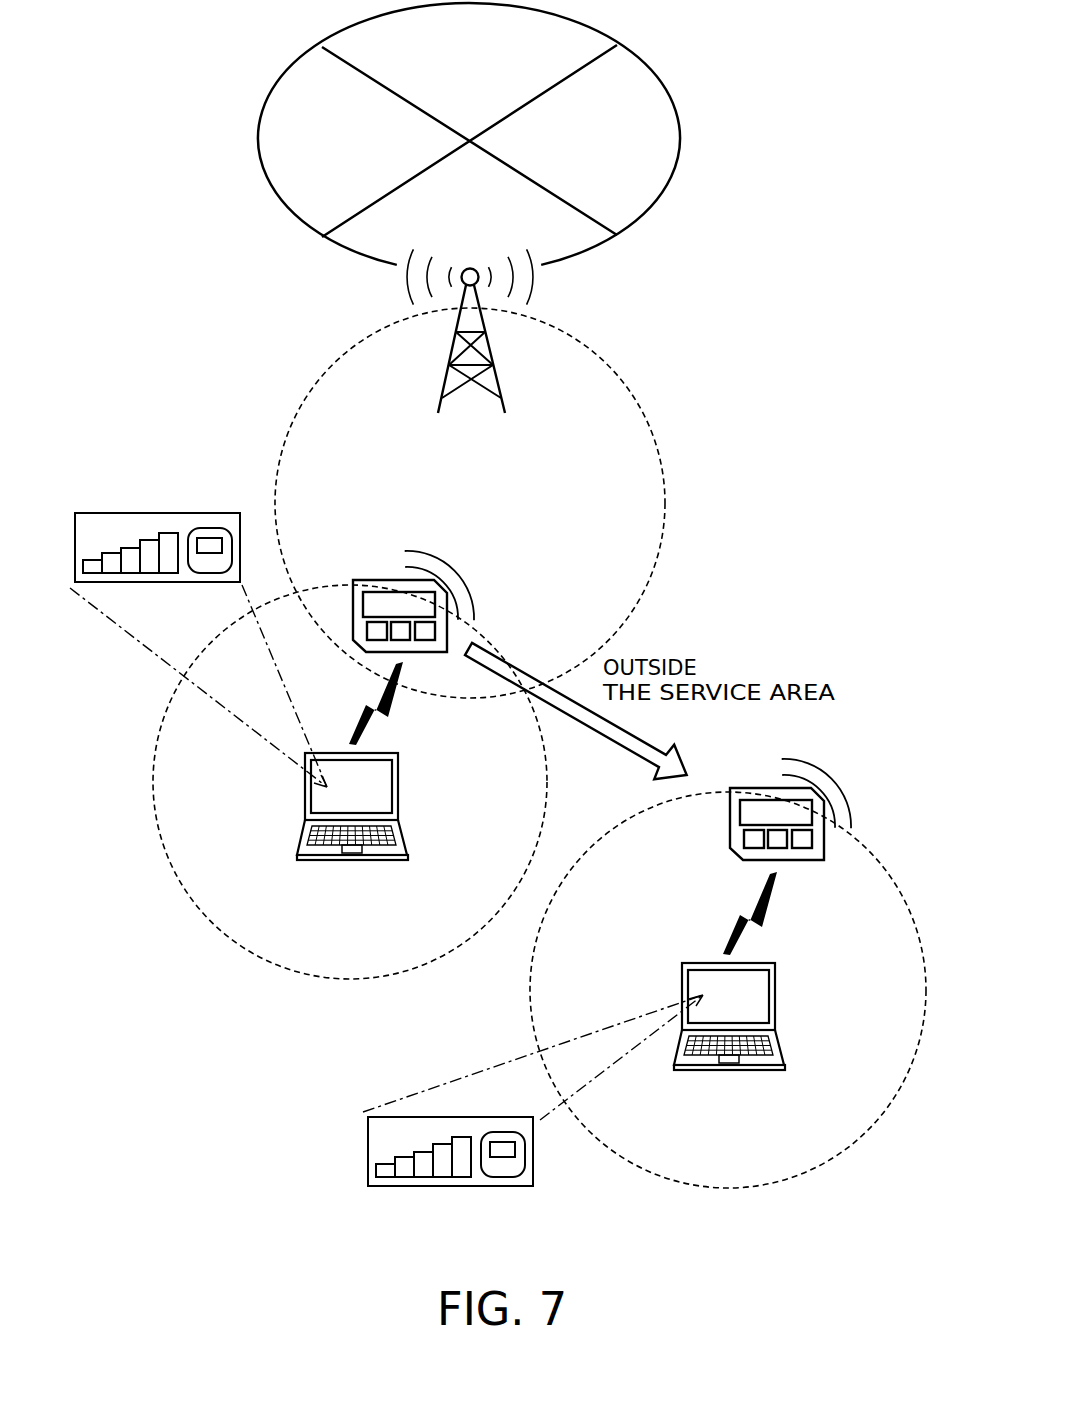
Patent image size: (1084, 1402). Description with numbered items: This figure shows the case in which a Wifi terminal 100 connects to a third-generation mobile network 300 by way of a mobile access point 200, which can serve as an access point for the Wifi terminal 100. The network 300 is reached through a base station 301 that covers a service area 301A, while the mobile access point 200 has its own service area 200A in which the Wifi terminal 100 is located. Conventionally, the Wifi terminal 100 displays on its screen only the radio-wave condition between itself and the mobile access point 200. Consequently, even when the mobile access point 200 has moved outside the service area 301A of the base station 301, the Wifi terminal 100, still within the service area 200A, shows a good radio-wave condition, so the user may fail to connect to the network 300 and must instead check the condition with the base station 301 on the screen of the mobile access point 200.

The Wifi terminal 100 is at (398, 785).
The mobile 3G access point 200 is at (370, 578).
The service area of the mobile 3G access point 200A is at (351, 980).
The 3G network 300 is at (681, 143).
The base station 301 is at (500, 383).
The service area of the base station 301A is at (667, 492).